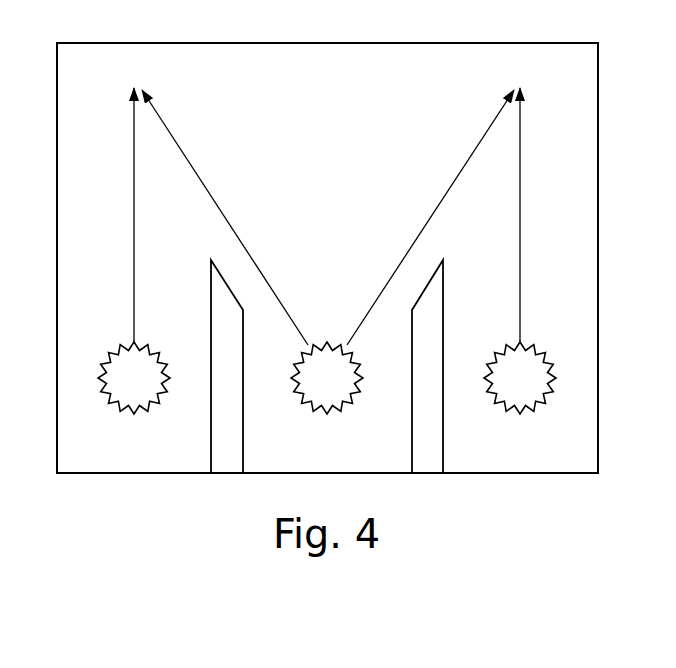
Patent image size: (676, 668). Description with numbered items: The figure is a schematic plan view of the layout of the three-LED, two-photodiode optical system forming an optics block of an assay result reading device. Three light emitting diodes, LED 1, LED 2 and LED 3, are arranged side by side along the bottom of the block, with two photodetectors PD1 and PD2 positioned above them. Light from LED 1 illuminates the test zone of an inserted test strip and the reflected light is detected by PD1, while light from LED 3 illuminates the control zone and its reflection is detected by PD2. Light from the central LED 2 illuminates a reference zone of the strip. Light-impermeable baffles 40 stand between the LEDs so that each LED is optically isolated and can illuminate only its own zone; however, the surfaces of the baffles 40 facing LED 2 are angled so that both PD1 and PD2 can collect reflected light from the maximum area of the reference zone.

The light-impermeable baffle 40 is at (243, 442).
The LED 1 is at (134, 378).
The LED 2 is at (327, 378).
The LED 3 is at (520, 378).
The photodetector PD1 is at (211, 204).
The photodetector PD2 is at (445, 204).